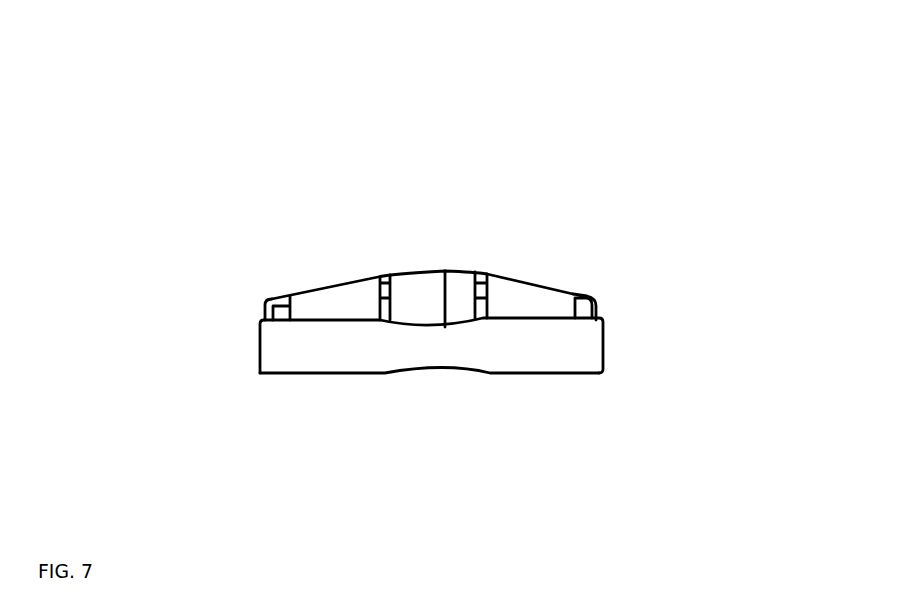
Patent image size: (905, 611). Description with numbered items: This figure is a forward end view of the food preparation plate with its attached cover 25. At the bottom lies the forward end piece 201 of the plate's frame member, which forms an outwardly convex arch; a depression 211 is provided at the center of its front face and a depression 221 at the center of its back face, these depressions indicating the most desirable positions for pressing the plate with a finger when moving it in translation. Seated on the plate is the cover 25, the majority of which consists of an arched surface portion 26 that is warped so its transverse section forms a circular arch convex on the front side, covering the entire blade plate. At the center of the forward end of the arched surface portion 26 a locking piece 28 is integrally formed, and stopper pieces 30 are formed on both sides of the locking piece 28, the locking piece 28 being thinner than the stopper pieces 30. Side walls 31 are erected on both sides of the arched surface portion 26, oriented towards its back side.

The forward end piece 201 is at (343, 350).
The depression 221 is at (435, 368).
The depression 211 is at (445, 271).
The cover 25 is at (463, 277).
The arched surface portion 26 is at (368, 277).
The locking piece 28 is at (425, 295).
The stopper piece 30 is at (337, 298).
The side wall 31 is at (263, 318).